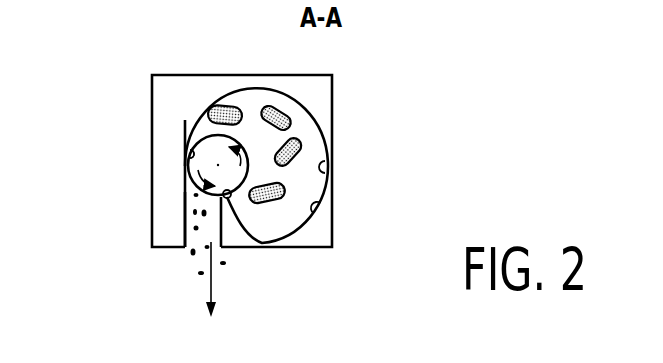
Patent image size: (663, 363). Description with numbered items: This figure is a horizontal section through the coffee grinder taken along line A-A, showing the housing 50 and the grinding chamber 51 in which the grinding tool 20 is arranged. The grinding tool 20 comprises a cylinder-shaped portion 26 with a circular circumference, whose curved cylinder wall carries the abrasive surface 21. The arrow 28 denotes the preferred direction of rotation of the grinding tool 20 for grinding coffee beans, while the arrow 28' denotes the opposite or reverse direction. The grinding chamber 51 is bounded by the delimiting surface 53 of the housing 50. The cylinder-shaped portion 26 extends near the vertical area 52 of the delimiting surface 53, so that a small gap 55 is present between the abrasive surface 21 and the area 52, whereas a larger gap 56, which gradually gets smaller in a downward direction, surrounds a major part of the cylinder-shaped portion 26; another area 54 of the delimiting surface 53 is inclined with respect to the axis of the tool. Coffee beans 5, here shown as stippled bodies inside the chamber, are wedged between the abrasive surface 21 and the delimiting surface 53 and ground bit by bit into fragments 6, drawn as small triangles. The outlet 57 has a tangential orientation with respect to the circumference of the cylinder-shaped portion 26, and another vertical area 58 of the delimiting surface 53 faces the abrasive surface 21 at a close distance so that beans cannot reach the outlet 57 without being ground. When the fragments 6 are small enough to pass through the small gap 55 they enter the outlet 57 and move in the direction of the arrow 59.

The coffee beans 5 is at (220, 104).
The fragments 6 is at (176, 273).
The grinding tool 20 is at (188, 169).
The abrasive surface 21 is at (190, 141).
The cylinder-shaped portion 26 is at (192, 154).
The arrow 28 is at (266, 105).
The arrow 28' is at (151, 203).
The housing 50 is at (160, 93).
The grinding chamber 51 is at (312, 137).
The vertical area 52 is at (188, 152).
The delimiting surface 53 is at (323, 205).
The inclined area 54 is at (322, 165).
The small gap 55 is at (206, 160).
The larger gap 56 is at (312, 192).
The outlet 57 is at (183, 207).
The vertical area 58 is at (227, 198).
The arrow 59 is at (209, 299).